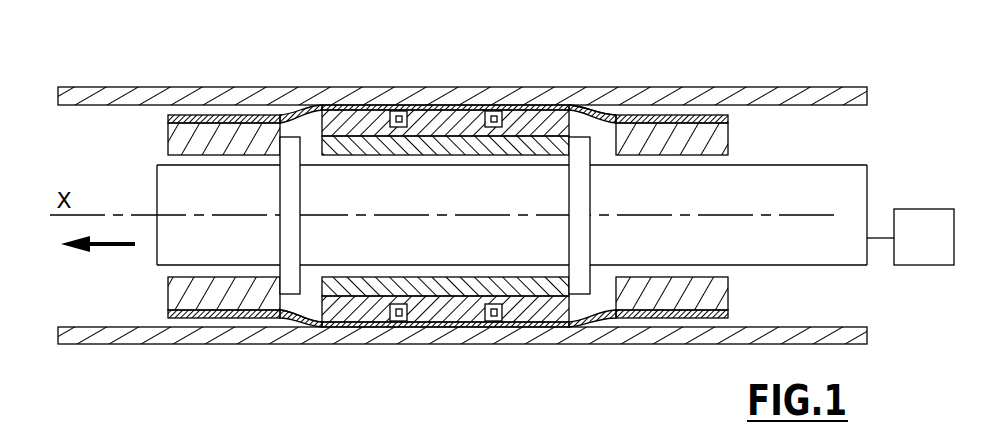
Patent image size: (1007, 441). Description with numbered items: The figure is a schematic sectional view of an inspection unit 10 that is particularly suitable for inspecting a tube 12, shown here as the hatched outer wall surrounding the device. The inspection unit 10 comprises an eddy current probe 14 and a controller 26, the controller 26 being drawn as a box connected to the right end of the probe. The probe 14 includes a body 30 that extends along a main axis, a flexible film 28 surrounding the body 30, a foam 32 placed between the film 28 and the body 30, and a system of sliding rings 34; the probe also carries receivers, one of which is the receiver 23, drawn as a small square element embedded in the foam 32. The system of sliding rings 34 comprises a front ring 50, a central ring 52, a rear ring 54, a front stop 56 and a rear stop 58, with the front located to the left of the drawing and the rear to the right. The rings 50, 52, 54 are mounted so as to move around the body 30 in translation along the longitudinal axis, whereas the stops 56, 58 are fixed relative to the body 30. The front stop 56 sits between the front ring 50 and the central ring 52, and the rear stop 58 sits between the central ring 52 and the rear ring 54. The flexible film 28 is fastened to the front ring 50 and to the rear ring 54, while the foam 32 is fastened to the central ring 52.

The inspection unit 10 is at (200, 102).
The tube 12 is at (347, 97).
The eddy current probe 14 is at (110, 152).
The receiver 23 is at (400, 112).
The controller 26 is at (909, 254).
The film 28 is at (538, 185).
The body 30 is at (607, 110).
The foam 32 is at (448, 122).
The system of sliding rings 34 is at (298, 312).
The front ring 50 is at (212, 288).
The central ring 52 is at (439, 283).
The rear ring 54 is at (677, 293).
The front stop 56 is at (292, 233).
The rear stop 58 is at (580, 278).